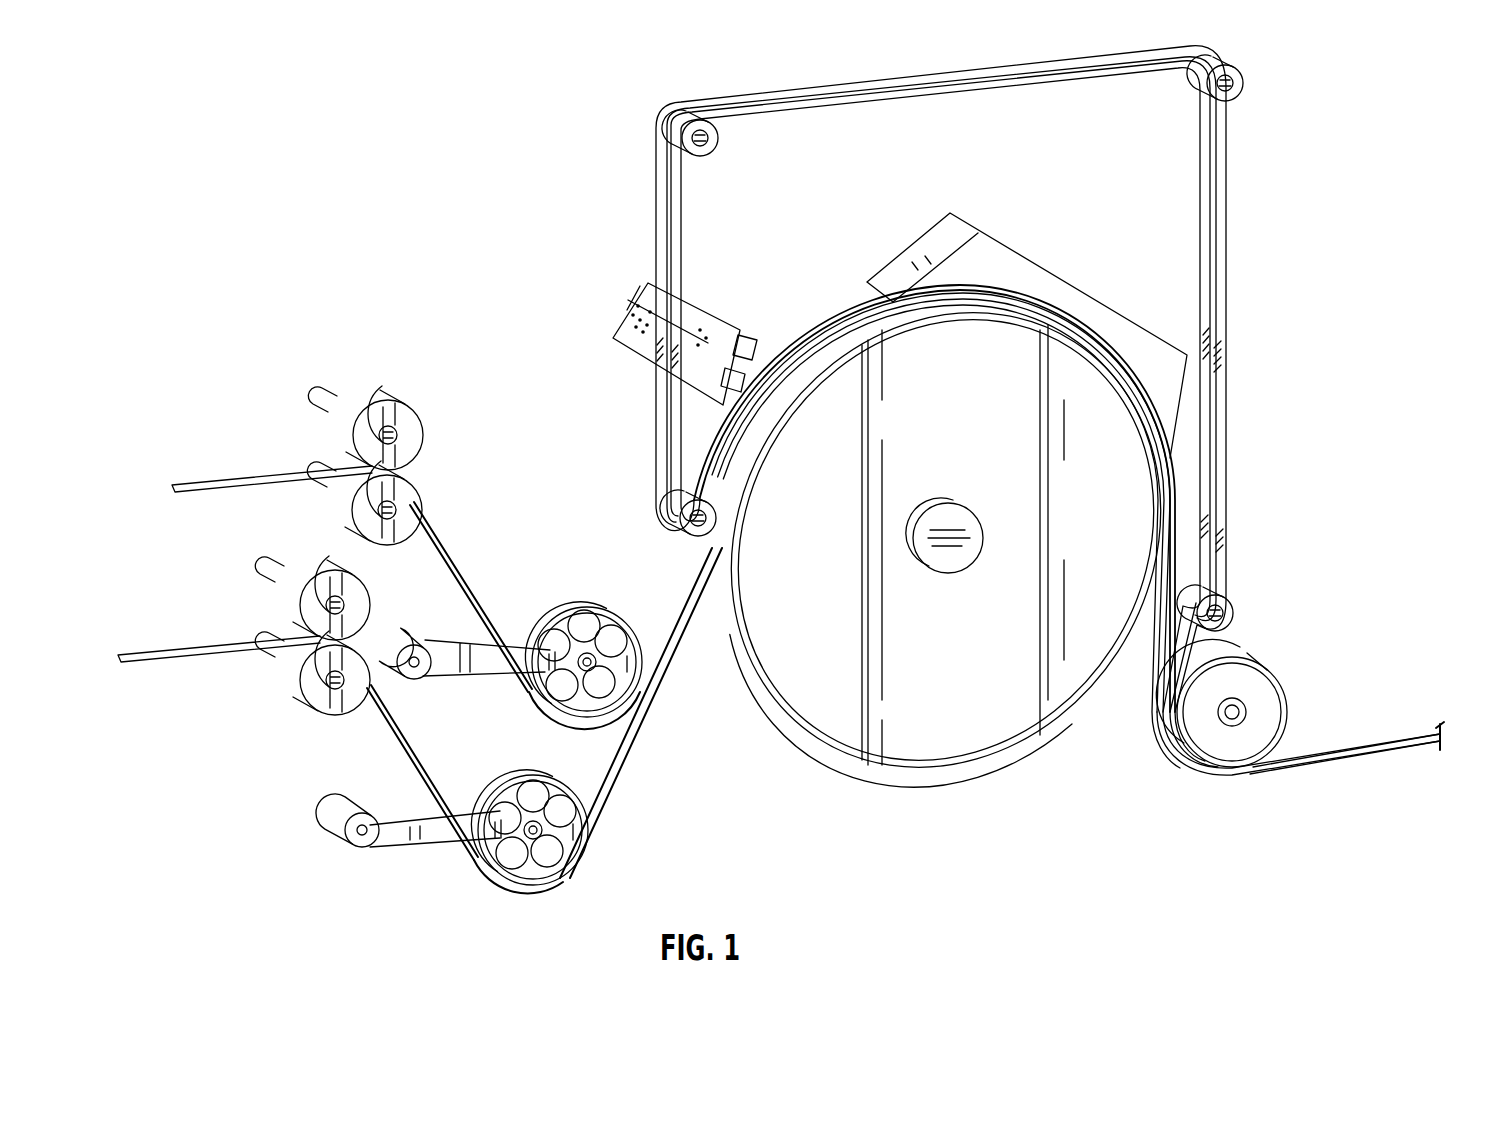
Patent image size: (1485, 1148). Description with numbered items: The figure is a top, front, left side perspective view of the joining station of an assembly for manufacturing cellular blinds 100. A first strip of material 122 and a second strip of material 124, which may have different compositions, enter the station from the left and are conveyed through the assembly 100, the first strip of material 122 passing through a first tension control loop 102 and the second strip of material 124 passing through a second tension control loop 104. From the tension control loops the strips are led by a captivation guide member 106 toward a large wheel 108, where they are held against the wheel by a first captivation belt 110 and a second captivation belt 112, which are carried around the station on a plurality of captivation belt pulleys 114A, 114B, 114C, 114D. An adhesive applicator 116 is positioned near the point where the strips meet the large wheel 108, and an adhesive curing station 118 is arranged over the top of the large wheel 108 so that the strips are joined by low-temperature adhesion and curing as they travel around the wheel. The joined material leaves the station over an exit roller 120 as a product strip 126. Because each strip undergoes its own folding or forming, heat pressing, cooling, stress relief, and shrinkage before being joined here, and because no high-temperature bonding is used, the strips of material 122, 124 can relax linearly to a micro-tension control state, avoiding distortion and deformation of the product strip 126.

The assembly for manufacturing cellular blinds 100 is at (400, 134).
The first tension control loop 102 is at (472, 480).
The second tension control loop 104 is at (278, 782).
The captivation guide member 106 is at (700, 595).
The large wheel 108 is at (972, 781).
The first captivation belt 110 is at (1200, 288).
The second captivation belt 112 is at (1230, 374).
The captivation belt pulley 114A is at (665, 524).
The captivation belt pulley 114B is at (655, 110).
The captivation belt pulley 114C is at (1246, 80).
The captivation belt pulley 114D is at (1232, 607).
The adhesive applicator 116 is at (712, 332).
The adhesive curing station 118 is at (1043, 268).
The exit roller 120 is at (1291, 697).
The first strip of material 122 is at (196, 485).
The second strip of material 124 is at (184, 650).
The product strip 126 is at (1362, 762).